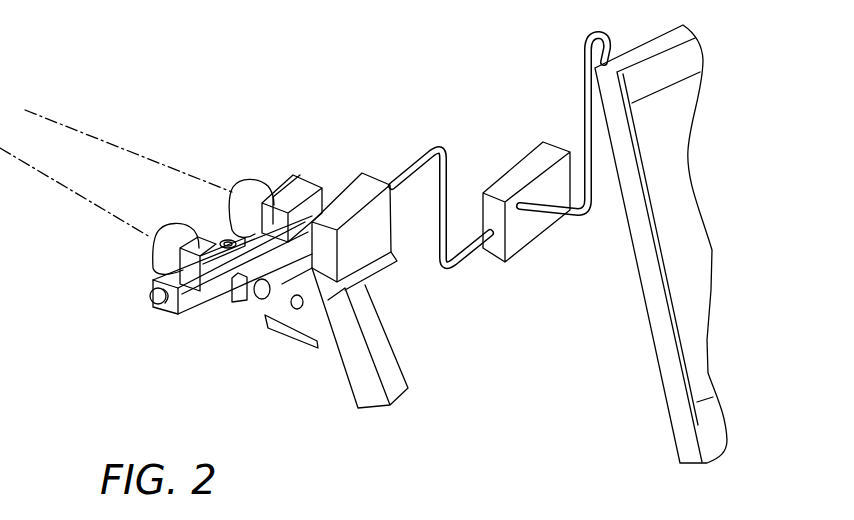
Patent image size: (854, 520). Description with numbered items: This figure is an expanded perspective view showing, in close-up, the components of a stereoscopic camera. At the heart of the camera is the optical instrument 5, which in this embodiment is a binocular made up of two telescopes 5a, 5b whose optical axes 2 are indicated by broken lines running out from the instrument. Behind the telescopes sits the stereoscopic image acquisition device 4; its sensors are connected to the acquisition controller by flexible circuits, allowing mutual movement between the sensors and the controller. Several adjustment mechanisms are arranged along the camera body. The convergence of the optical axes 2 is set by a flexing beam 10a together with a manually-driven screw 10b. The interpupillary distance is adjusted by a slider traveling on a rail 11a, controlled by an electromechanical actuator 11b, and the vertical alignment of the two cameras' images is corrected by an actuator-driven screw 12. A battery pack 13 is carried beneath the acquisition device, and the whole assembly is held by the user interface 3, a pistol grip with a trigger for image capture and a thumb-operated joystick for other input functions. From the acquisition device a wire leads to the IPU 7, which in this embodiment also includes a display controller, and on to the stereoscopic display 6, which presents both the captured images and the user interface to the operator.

The optical axes 2 is at (75, 191).
The user interface 3 is at (343, 393).
The stereoscopic image acquisition device 4 is at (374, 176).
The optical instrument 5 is at (172, 199).
The telescope 5a is at (156, 235).
The telescope 5b is at (238, 181).
The stereoscopic display 6 is at (675, 142).
The IPU 7 is at (523, 232).
The flexing beam 10a is at (265, 204).
The manually-driven screw 10b is at (260, 312).
The rail 11a is at (160, 268).
The electromechanical actuator 11b is at (150, 303).
The actuator-driven screw 12 is at (226, 230).
The battery pack 13 is at (376, 268).